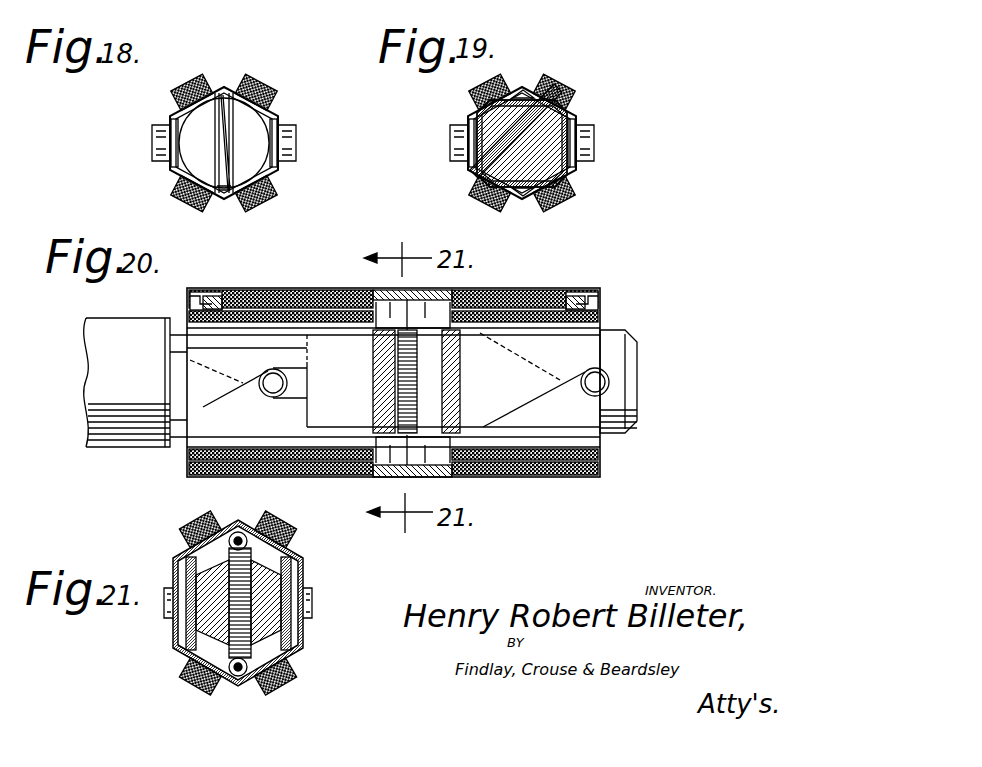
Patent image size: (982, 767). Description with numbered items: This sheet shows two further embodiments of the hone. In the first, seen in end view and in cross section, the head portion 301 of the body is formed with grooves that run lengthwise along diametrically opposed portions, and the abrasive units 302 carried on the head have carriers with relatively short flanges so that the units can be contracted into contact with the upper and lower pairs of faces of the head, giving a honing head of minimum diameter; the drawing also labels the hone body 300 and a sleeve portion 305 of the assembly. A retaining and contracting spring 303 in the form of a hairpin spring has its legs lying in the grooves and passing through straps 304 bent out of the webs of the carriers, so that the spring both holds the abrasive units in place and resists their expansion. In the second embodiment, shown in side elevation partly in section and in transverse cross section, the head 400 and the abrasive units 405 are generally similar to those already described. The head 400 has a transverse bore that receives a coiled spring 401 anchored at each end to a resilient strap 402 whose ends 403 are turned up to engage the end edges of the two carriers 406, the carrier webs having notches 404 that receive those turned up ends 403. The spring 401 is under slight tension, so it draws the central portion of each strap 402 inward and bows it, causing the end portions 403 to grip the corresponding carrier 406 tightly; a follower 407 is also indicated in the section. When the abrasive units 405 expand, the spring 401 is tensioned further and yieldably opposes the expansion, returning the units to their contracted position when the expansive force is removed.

In FIG. 18, the fitting body 300 is at (195, 118).
In FIG. 19, the fitting body 300 is at (476, 170).
In FIG. 18, the head portion 301 is at (224, 90).
In FIG. 19, the abrasive unit 302 is at (580, 108).
In FIG. 18, the retaining and contracting spring 303 is at (224, 200).
In FIG. 19, the retaining and contracting spring 303 is at (523, 194).
In FIG. 19, the strap 304 is at (523, 90).
In FIG. 19, the lining 305 is at (478, 108).
In FIG. 20, the head 400 is at (627, 335).
In FIG. 21, the head 400 is at (186, 632).
In FIG. 20, the coiled spring 401 is at (412, 378).
In FIG. 21, the coiled spring 401 is at (246, 565).
In FIG. 20, the resilient strap 402 is at (452, 292).
In FIG. 21, the resilient strap 402 is at (246, 680).
In FIG. 20, the turned up end 403 is at (605, 298).
In FIG. 20, the notch 404 is at (190, 302).
In FIG. 20, the abrasive unit 405 is at (555, 290).
In FIG. 20, the carrier 406 is at (412, 456).
In FIG. 21, the carrier 406 is at (255, 522).
In FIG. 20, the follower 407 is at (442, 396).